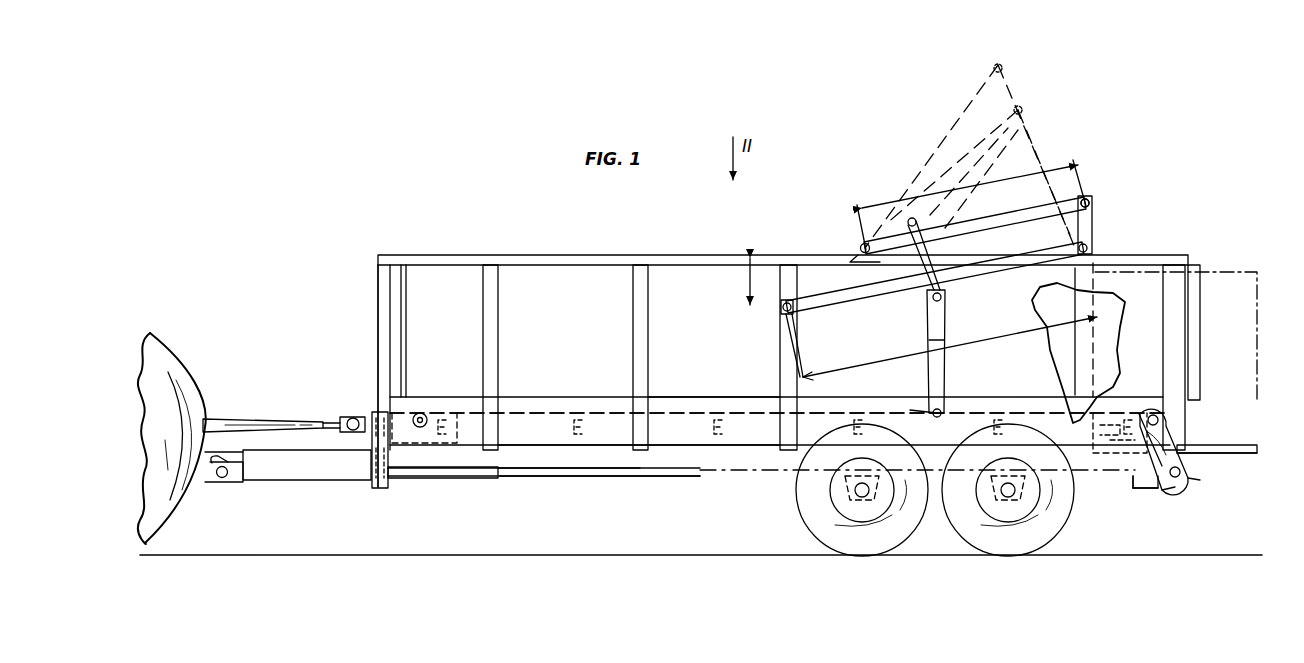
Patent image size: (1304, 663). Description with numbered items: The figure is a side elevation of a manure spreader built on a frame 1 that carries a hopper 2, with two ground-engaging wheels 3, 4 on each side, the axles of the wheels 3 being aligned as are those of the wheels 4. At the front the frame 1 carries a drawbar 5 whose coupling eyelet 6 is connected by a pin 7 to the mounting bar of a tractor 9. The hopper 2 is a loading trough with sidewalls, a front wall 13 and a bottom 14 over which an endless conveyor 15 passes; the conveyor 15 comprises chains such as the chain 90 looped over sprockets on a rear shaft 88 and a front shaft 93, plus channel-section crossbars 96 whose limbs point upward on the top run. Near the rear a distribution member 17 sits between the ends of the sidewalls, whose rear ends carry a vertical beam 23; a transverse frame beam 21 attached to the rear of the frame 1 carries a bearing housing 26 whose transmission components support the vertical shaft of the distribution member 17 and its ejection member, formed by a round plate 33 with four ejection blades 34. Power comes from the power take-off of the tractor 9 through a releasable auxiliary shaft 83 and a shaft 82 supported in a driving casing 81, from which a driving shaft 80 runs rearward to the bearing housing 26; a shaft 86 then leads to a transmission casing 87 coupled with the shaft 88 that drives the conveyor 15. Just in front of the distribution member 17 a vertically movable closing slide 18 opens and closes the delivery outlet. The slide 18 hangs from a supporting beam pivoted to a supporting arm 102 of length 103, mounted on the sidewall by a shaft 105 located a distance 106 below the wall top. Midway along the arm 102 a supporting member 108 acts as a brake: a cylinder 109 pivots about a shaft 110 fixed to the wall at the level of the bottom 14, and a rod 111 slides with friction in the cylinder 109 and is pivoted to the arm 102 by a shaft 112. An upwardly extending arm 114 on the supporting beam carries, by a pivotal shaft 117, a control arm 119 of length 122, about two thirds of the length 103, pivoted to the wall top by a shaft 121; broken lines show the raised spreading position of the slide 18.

The frame 1 is at (746, 450).
The hopper 2 is at (542, 290).
The wheel 3 is at (805, 522).
The wheel 4 is at (962, 525).
The drawbar 5 is at (306, 460).
The coupling eyelet 6 is at (234, 474).
The pin 7 is at (216, 452).
The tractor 9 is at (196, 380).
The front wall 13 is at (376, 310).
The bottom 14 is at (558, 412).
The conveyor 15 is at (622, 447).
The distribution member 17 is at (1237, 270).
The closing slide 18 is at (1095, 318).
The frame beam 21 is at (1132, 490).
The vertical beam 23 is at (1168, 303).
The bearing housing 26 is at (1166, 488).
The round plate 33 is at (1247, 455).
The ejection blade 34 is at (1228, 445).
The driving shaft 80 is at (702, 471).
The driving casing 81 is at (372, 462).
The shaft 82 is at (356, 416).
The auxiliary shaft 83 is at (262, 422).
The shaft 86 is at (1195, 482).
The transmission casing 87 is at (1140, 492).
The shaft 88 is at (1153, 414).
The chain 90 is at (546, 442).
The shaft 93 is at (420, 413).
The crossbars 96 is at (688, 400).
The supporting arm 102 is at (878, 292).
The length 103 is at (892, 358).
The shaft 105 is at (782, 312).
The distance 106 is at (750, 282).
The supporting member 108 is at (946, 370).
The cylinder 109 is at (941, 388).
The shaft 110 is at (930, 410).
The rod 111 is at (948, 312).
The shaft 112 is at (950, 292).
The upwardly extending arm 114 is at (1092, 210).
The pivotal shaft 117 is at (1090, 200).
The control arm 119 is at (998, 228).
The pivotal shaft 121 is at (858, 246).
The length 122 is at (976, 194).